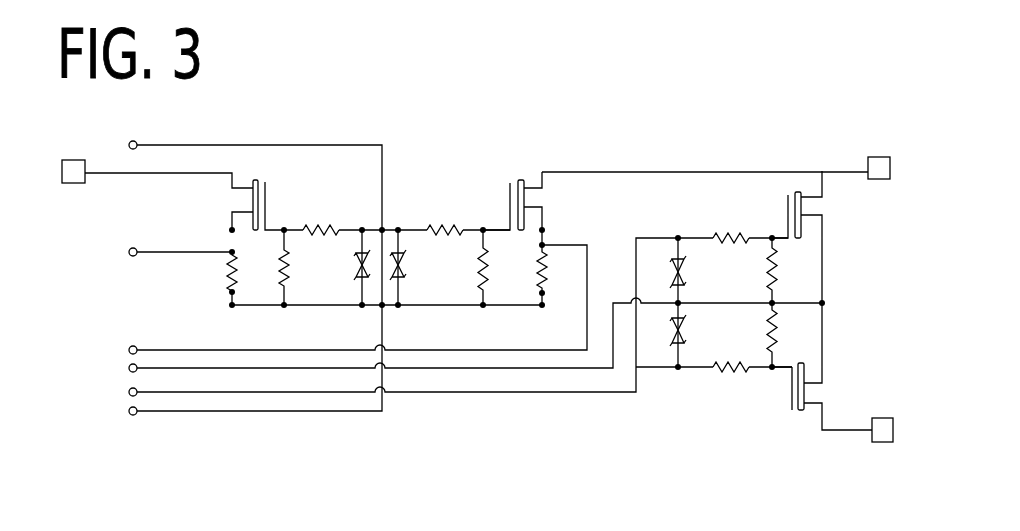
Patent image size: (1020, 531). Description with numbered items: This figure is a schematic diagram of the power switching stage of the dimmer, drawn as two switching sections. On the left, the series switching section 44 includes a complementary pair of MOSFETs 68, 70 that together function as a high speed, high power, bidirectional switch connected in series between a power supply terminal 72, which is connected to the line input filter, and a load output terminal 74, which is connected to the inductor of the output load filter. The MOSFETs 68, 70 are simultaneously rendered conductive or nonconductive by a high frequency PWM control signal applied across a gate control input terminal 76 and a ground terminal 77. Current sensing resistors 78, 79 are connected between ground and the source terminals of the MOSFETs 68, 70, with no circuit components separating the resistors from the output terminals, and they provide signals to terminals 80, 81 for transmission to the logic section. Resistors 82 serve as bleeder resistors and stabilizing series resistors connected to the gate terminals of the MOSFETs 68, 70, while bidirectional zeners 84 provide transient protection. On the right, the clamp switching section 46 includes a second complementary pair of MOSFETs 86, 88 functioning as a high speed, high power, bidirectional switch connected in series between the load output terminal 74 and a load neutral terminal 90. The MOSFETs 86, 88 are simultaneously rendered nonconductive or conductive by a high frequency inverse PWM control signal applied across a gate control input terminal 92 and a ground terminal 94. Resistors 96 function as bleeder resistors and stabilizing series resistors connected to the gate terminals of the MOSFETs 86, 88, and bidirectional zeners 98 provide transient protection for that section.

The series switching section 44 is at (458, 147).
The clamp switching section 46 is at (822, 149).
The MOSFET 68 is at (270, 183).
The MOSFET 70 is at (512, 188).
The power supply terminal 72 is at (73, 160).
The load output terminal 74 is at (880, 180).
The gate control input terminal 76 is at (134, 141).
The ground terminal 77 is at (129, 413).
The current sensing resistor 78 is at (228, 275).
The current sensing resistor 79 is at (553, 262).
The terminal 80 is at (129, 251).
The terminal 81 is at (129, 347).
The resistor 82 is at (332, 227).
The bidirectional zener 84 is at (357, 264).
The MOSFET 86 is at (788, 203).
The MOSFET 88 is at (792, 403).
The load neutral terminal 90 is at (883, 418).
The gate control input terminal 92 is at (129, 392).
The ground terminal 94 is at (129, 367).
The resistor 96 is at (748, 233).
The bidirectional zener 98 is at (687, 286).